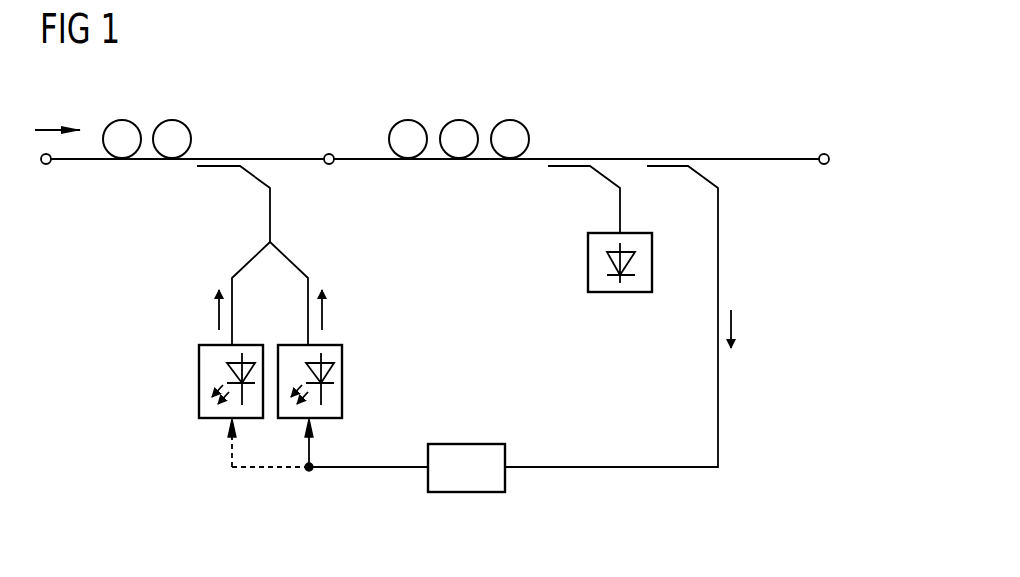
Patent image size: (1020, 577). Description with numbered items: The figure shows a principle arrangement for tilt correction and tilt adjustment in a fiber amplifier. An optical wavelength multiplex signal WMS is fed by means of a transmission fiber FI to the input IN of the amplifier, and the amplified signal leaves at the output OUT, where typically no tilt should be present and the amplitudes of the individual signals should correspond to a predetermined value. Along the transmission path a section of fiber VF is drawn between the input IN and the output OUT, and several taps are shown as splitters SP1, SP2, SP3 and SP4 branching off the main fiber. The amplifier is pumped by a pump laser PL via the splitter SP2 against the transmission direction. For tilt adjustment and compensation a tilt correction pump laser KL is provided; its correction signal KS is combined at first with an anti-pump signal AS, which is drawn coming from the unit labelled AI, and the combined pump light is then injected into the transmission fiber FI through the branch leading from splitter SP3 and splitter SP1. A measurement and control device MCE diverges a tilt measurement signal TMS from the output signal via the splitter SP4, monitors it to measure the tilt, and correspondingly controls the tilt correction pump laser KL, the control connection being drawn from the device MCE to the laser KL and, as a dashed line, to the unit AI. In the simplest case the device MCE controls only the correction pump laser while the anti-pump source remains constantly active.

The input IN is at (187, 161).
The output OUT is at (850, 160).
The optical wavelength multiplex signal WMS is at (66, 111).
The transmission fiber FI is at (147, 125).
The delay fiber VF is at (459, 119).
The first splitter SP1 is at (233, 204).
The splitter SP2 is at (584, 199).
The third splitter SP3 is at (280, 282).
The fourth splitter SP4 is at (611, 316).
The anti-pump signal AS is at (201, 310).
The correction signal KS is at (340, 310).
The tilt measurement signal TMS is at (758, 329).
The alarm indicator AI is at (199, 373).
The tilt correction pump laser KL is at (342, 369).
The pump laser PL is at (588, 262).
The measurement and control device MCE is at (407, 468).